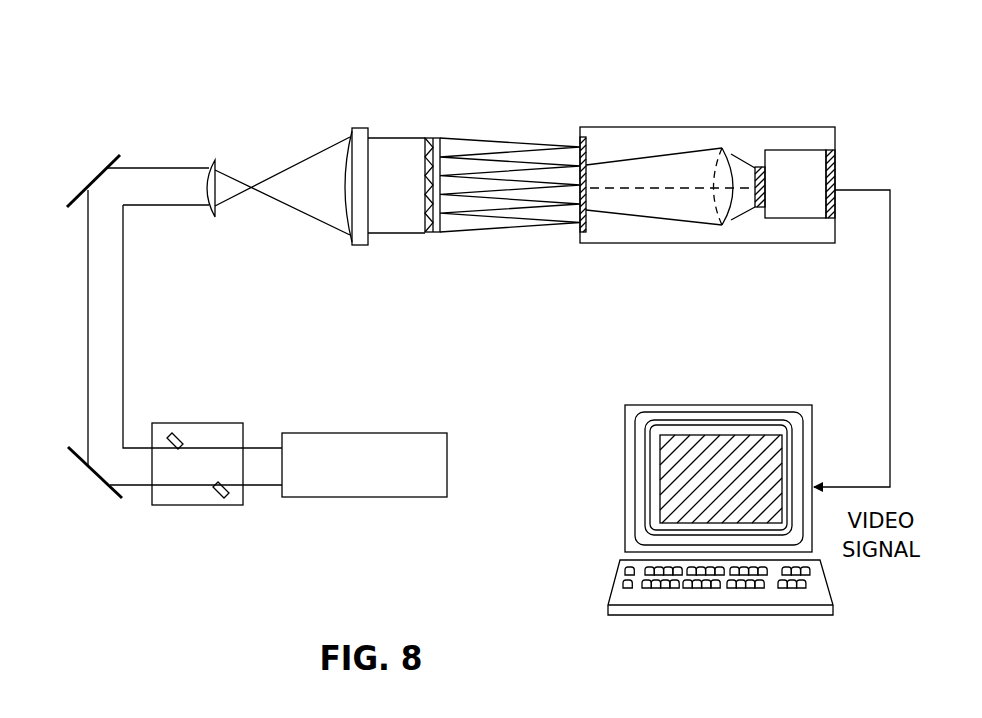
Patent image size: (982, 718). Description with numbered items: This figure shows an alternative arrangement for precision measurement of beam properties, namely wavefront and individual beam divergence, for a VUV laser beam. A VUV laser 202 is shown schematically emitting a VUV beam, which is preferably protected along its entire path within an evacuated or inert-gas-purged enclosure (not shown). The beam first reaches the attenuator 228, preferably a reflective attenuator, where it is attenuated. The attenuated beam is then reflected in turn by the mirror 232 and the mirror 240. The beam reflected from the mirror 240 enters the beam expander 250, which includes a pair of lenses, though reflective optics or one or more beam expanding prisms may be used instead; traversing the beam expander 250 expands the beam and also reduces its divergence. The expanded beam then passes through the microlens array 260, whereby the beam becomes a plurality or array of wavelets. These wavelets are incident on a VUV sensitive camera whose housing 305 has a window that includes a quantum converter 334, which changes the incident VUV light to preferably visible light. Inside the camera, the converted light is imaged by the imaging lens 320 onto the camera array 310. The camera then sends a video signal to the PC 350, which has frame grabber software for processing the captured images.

The VUV laser 202 is at (378, 498).
The attenuator 228 is at (210, 497).
The mirror 232 is at (82, 463).
The mirror 240 is at (76, 198).
The beam expander 250 is at (368, 121).
The microlens array 260 is at (433, 234).
The housing 305 is at (615, 125).
The camera array 310 is at (814, 150).
The imaging lens 320 is at (724, 229).
The quantum converter 334 is at (581, 130).
The PC 350 is at (760, 404).